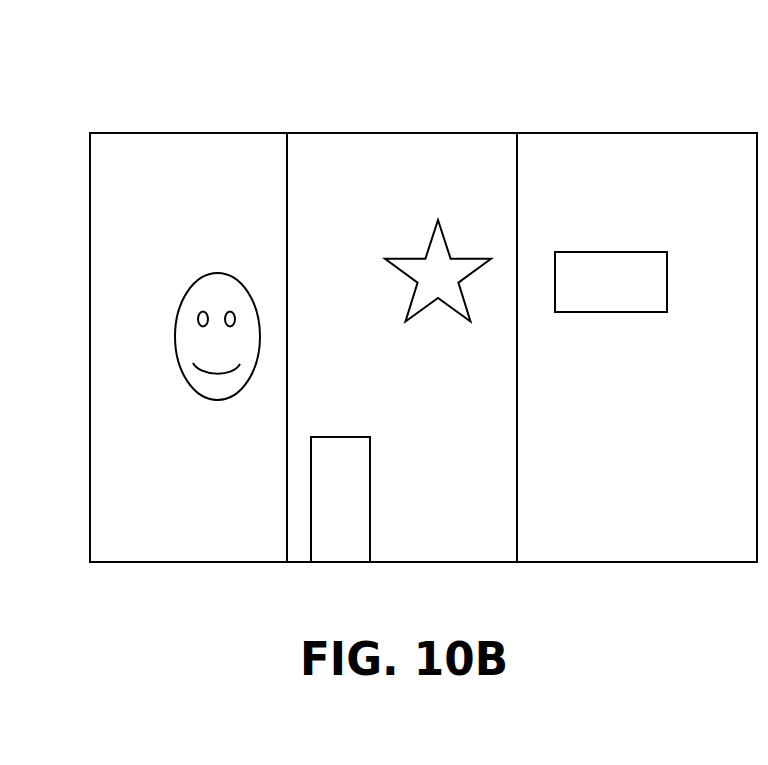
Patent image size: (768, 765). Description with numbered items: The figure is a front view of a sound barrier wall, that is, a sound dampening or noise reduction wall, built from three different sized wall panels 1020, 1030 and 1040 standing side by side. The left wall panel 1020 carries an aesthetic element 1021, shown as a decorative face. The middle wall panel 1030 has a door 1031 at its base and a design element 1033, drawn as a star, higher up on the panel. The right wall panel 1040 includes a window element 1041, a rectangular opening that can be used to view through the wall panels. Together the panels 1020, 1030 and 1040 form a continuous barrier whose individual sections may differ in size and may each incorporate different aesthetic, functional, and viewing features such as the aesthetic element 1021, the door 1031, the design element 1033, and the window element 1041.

The wall panel 1020 is at (162, 132).
The aesthetic element 1021 is at (218, 403).
The wall panel 1030 is at (305, 132).
The door 1031 is at (347, 565).
The design element 1033 is at (449, 229).
The wall panel 1040 is at (590, 132).
The window element 1041 is at (613, 323).